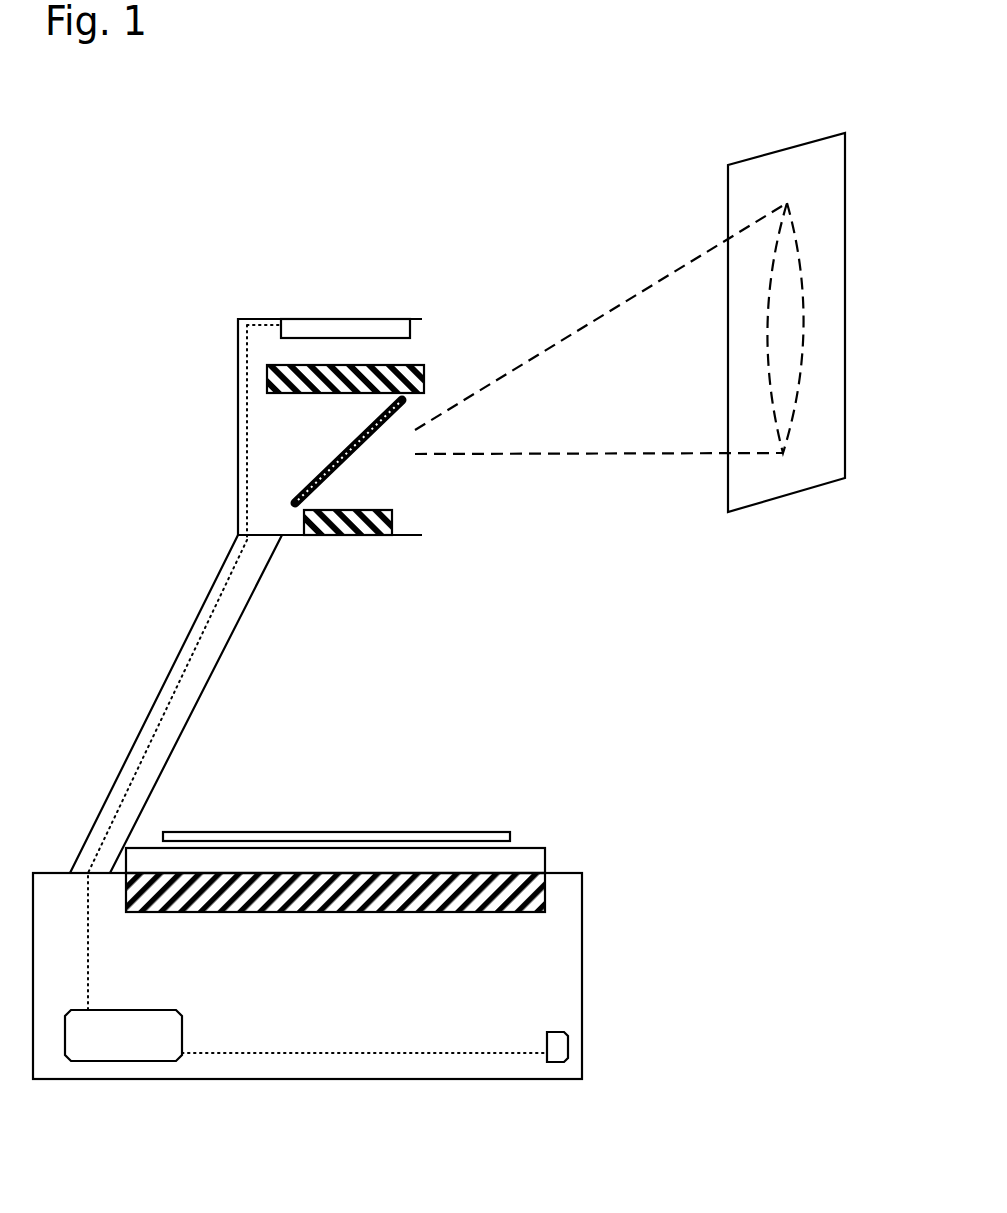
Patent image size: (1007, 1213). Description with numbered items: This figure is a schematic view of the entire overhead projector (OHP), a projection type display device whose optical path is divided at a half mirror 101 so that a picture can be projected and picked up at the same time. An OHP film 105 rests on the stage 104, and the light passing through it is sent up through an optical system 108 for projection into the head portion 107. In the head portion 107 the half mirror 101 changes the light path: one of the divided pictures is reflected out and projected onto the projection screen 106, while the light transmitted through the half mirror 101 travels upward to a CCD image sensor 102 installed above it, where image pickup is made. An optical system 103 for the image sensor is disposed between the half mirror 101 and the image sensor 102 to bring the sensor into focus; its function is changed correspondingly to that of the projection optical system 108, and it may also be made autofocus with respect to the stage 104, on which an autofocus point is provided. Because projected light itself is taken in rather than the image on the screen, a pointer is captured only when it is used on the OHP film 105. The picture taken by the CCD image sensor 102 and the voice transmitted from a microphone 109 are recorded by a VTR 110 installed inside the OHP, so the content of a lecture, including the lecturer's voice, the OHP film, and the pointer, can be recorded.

The half mirror 101 is at (307, 484).
The CCD image sensor 102 is at (313, 323).
The optical system for the image sensor 103 is at (425, 368).
The stage 104 is at (533, 848).
The OHP film 105 is at (447, 830).
The projection screen 106 is at (750, 173).
The head portion 107 is at (236, 373).
The optical system for projection 108 is at (373, 532).
The microphone 109 is at (552, 1049).
The VTR 110 is at (130, 1047).